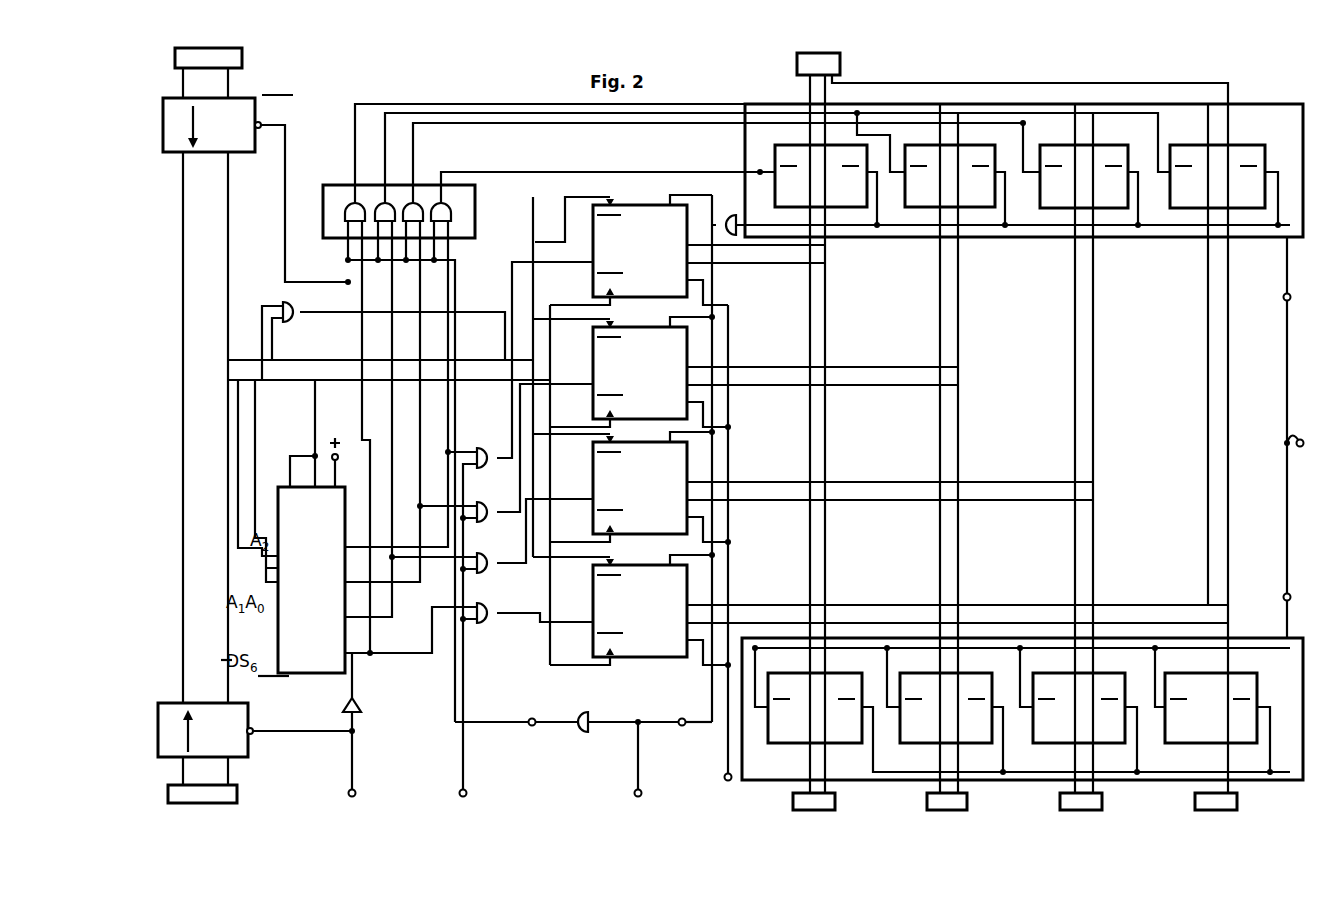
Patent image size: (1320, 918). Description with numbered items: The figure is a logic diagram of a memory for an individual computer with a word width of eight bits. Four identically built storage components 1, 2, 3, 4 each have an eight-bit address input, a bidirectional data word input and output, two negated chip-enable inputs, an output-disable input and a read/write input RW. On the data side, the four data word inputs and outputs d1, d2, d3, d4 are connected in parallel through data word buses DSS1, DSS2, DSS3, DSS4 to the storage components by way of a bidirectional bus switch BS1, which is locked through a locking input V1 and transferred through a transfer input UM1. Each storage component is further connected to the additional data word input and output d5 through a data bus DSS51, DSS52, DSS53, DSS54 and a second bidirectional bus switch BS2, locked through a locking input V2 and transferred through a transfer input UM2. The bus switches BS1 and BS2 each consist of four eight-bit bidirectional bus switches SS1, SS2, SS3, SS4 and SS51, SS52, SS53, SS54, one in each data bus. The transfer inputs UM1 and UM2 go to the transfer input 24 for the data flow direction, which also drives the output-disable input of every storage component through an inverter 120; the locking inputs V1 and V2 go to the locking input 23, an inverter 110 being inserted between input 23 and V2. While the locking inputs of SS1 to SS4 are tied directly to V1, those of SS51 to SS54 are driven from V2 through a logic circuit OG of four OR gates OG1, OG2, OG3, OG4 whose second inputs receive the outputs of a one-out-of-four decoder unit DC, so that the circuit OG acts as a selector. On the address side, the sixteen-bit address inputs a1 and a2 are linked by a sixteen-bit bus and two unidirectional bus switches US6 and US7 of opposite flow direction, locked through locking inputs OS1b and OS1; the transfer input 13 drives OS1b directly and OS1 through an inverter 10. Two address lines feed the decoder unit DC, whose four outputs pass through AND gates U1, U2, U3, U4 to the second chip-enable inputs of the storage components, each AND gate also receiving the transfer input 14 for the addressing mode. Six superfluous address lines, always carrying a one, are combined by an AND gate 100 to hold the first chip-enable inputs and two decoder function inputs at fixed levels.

The storage component 1 is at (680, 250).
The storage component 2 is at (745, 372).
The storage component 3 is at (813, 487).
The storage component 4 is at (880, 610).
The inverter 10 is at (365, 704).
The transfer input 13 is at (364, 794).
The transfer input 14 is at (475, 794).
The locking input 23 is at (651, 763).
The transfer input 24 is at (1280, 430).
The AND gate 100 is at (302, 296).
The inverter 110 is at (585, 710).
The inverter 120 is at (730, 212).
The address input a1 is at (213, 796).
The address input a2 is at (219, 63).
The unidirectional bus switch US6 is at (248, 757).
The unidirectional bus switch US7 is at (214, 141).
The locking input OS1 is at (304, 188).
The locking input OS1b is at (275, 686).
The decoder unit DC is at (300, 673).
The logic circuit OG is at (404, 207).
The OR gate OG1 is at (348, 213).
The OR gate OG2 is at (382, 210).
The OR gate OG3 is at (413, 205).
The OR gate OG4 is at (452, 212).
The AND gate U1 is at (531, 365).
The AND gate U2 is at (535, 453).
The AND gate U3 is at (531, 536).
The AND gate U4 is at (535, 602).
The locking input V1 is at (692, 686).
The locking input V2 is at (545, 686).
The read/write input RW is at (720, 758).
The bidirectional bus switch BS1 is at (1022, 688).
The bidirectional bus switch BS2 is at (1024, 183).
The bidirectional bus switch SS1 is at (815, 708).
The bidirectional bus switch SS2 is at (946, 708).
The bidirectional bus switch SS3 is at (1079, 708).
The bidirectional bus switch SS4 is at (1211, 708).
The bidirectional bus switch SS51 is at (828, 197).
The bidirectional bus switch SS52 is at (958, 197).
The bidirectional bus switch SS53 is at (1097, 205).
The bidirectional bus switch SS54 is at (1240, 160).
The data word bus DSS1 is at (800, 262).
The data word bus DSS2 is at (930, 378).
The data word bus DSS3 is at (930, 500).
The data word bus DSS4 is at (1160, 606).
The data bus DSS51 is at (818, 235).
The data bus DSS52 is at (930, 372).
The data bus DSS53 is at (1068, 458).
The data bus DSS54 is at (1200, 572).
The data word input and output d1 is at (801, 801).
The data word input and output d2 is at (933, 801).
The data word input and output d3 is at (1067, 801).
The data word input and output d4 is at (1202, 801).
The additional data word input and output d5 is at (805, 68).
The transfer input UM1 is at (1278, 565).
The transfer input UM2 is at (1278, 283).